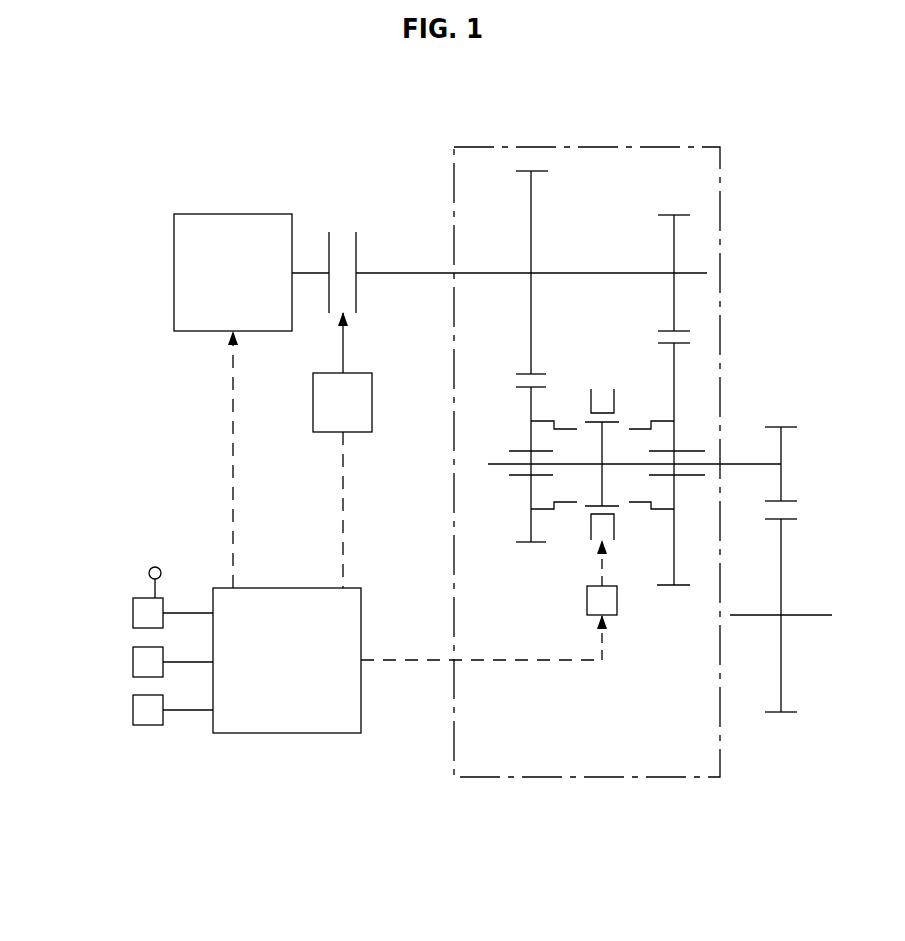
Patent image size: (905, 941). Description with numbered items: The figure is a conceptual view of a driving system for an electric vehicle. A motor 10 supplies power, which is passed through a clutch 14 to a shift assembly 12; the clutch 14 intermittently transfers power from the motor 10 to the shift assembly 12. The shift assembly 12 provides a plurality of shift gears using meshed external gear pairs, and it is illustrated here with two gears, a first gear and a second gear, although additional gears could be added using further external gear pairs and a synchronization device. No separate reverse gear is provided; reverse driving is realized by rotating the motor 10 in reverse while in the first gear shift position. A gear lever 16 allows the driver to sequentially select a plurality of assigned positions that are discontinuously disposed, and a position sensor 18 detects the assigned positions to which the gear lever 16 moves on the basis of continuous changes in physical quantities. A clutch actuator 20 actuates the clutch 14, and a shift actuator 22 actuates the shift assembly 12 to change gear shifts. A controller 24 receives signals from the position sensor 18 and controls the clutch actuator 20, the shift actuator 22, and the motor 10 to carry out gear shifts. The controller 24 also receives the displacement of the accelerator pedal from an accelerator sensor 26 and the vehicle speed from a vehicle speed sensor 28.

The motor 10 is at (193, 276).
The shift assembly 12 is at (720, 242).
The clutch 14 is at (342, 231).
The gear lever 16 is at (149, 573).
The position sensor 18 is at (147, 615).
The clutch actuator 20 is at (360, 432).
The shift actuator 22 is at (587, 600).
The controller 24 is at (290, 722).
The accelerator sensor 26 is at (147, 664).
The vehicle speed sensor 28 is at (147, 712).